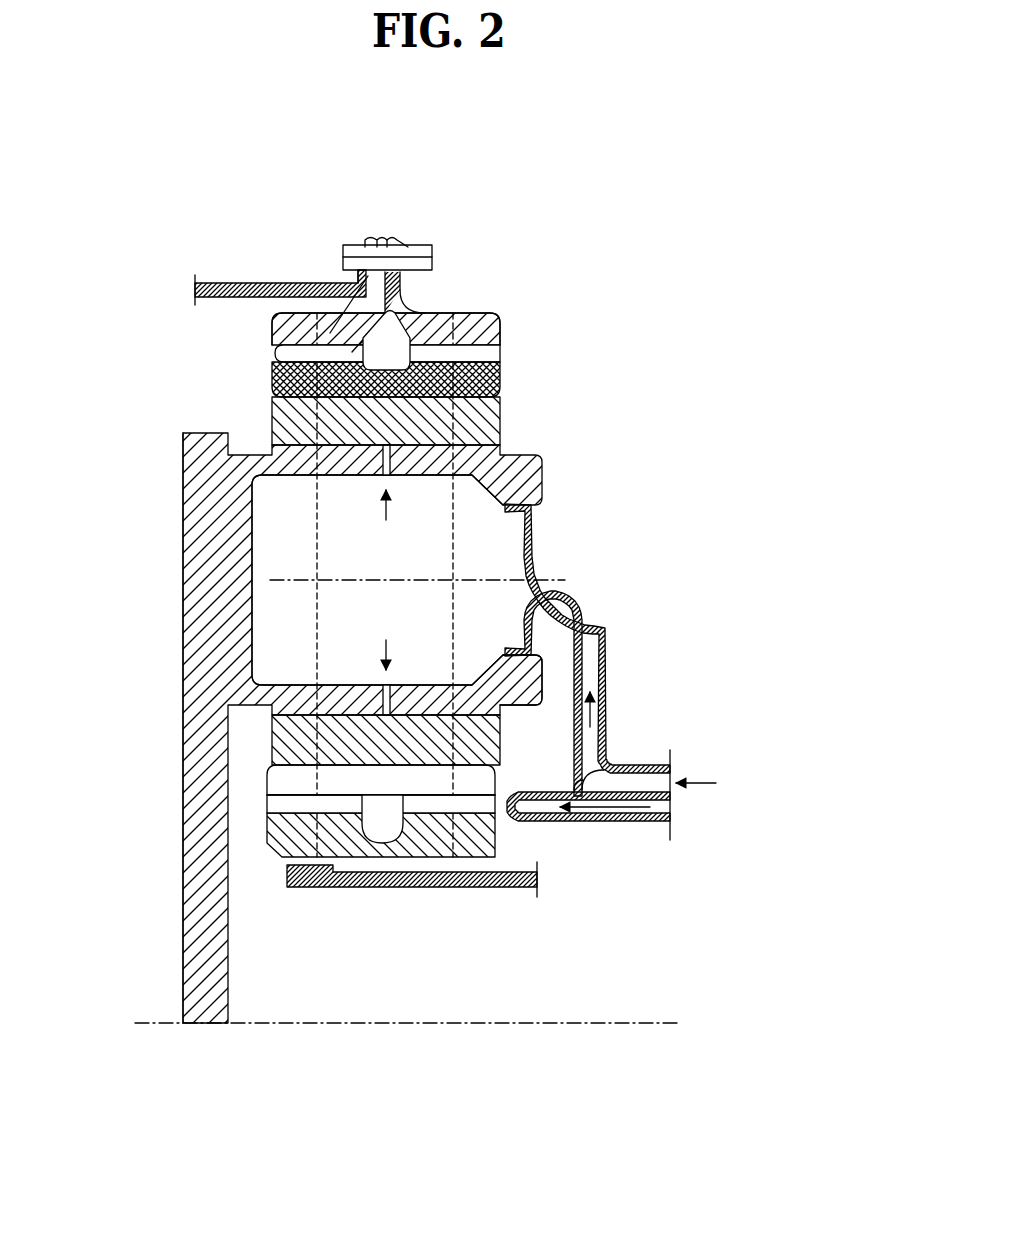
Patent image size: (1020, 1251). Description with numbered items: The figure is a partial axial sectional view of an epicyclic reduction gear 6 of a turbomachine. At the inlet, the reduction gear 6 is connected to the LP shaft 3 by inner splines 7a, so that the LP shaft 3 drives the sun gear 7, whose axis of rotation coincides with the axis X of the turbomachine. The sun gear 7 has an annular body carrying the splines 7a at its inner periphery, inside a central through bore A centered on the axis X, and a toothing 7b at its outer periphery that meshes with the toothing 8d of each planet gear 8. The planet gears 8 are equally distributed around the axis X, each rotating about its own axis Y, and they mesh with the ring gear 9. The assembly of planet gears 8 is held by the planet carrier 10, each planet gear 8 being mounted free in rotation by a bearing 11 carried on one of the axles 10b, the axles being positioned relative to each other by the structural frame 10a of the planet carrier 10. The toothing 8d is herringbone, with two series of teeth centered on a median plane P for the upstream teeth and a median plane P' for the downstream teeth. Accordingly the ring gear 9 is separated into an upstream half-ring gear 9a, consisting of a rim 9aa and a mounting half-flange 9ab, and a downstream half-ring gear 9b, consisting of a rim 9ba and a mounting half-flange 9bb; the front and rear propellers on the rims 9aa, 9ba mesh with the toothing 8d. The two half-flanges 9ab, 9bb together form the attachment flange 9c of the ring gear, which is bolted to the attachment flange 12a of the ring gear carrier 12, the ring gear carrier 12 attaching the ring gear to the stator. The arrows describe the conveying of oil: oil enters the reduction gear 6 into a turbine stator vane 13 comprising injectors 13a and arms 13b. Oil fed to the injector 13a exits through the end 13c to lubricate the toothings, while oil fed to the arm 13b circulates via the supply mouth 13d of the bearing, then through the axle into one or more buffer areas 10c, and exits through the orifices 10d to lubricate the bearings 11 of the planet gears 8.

The epicyclic reduction gear 6 is at (665, 300).
The LP shaft 3 is at (510, 890).
The sun gear 7 is at (334, 815).
The inner splines 7a is at (367, 872).
The toothing of the sun gear 7b is at (335, 803).
The planet gear 8 is at (267, 788).
The toothing of the planet gear 8d is at (267, 807).
The ring gear 9 is at (369, 231).
The upstream half-ring gear 9a is at (282, 333).
The rim of the upstream half-ring gear 9aa is at (297, 325).
The mounting half-flange of the upstream half-ring gear 9ab is at (380, 236).
The downstream half-ring gear 9b is at (494, 338).
The rim of the downstream half-ring gear 9ba is at (445, 325).
The mounting half-flange of the downstream half-ring gear 9bb is at (423, 200).
The attachment flange of the ring gear 9c is at (391, 168).
The planet carrier 10 is at (534, 465).
The structural frame of the planet carrier 10a is at (192, 540).
The axle of the planet carrier 10b is at (545, 683).
The buffer area 10c is at (316, 634).
The orifice 10d is at (400, 478).
The bearing 11 is at (500, 412).
The ring gear carrier 12 is at (230, 283).
The attachment flange of the ring gear carrier 12a is at (357, 238).
The turbine stator vane 13 is at (643, 711).
The injector 13a is at (622, 822).
The arm 13b is at (610, 630).
The end of the injector 13c is at (518, 828).
The supply mouth of the bearing 13d is at (528, 514).
The central through bore A is at (276, 866).
The median plane of the upstream teeth P is at (196, 914).
The median plane of the downstream teeth P' is at (382, 918).
The axis of rotation of the turbomachine X is at (655, 1023).
The axis of the planet gear Y is at (524, 582).